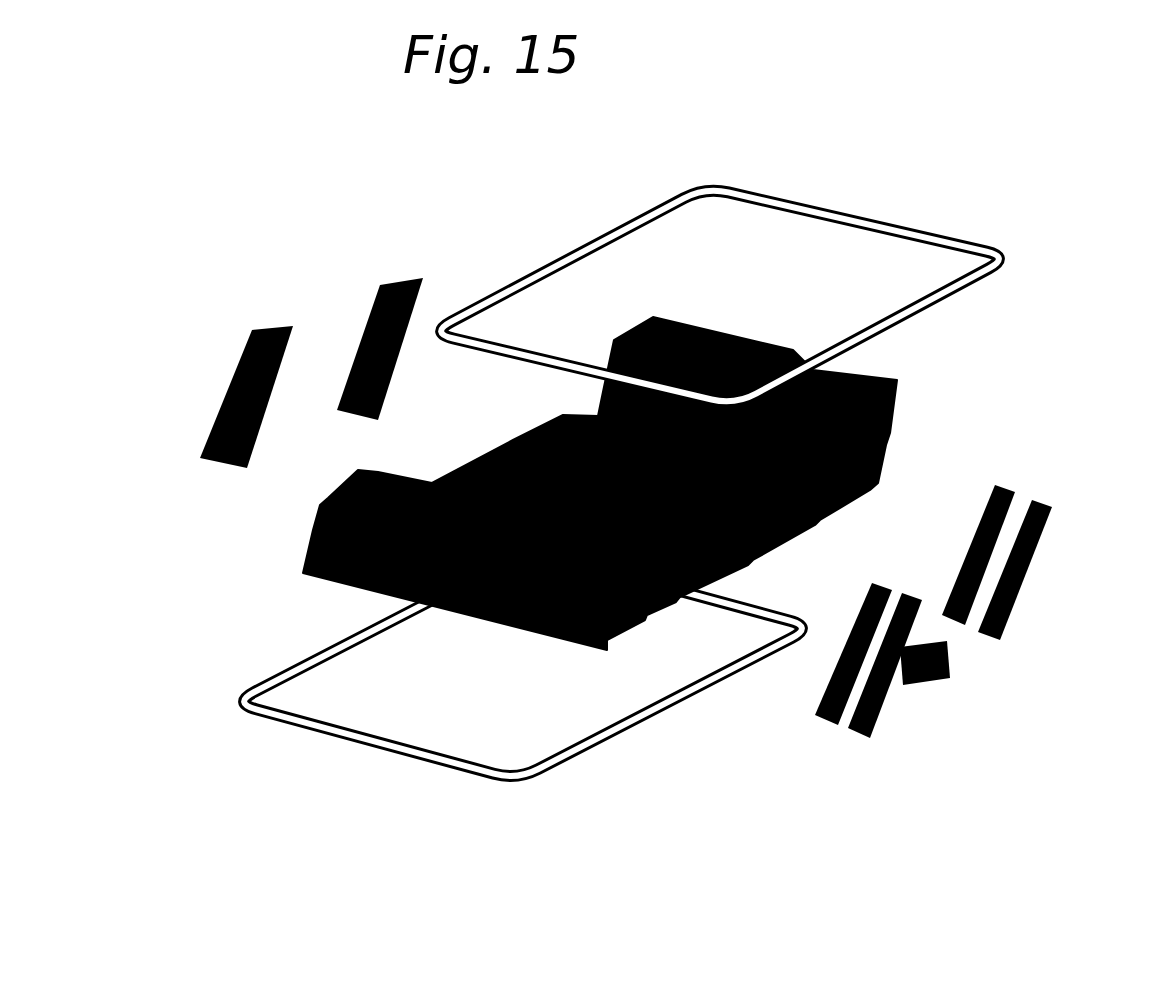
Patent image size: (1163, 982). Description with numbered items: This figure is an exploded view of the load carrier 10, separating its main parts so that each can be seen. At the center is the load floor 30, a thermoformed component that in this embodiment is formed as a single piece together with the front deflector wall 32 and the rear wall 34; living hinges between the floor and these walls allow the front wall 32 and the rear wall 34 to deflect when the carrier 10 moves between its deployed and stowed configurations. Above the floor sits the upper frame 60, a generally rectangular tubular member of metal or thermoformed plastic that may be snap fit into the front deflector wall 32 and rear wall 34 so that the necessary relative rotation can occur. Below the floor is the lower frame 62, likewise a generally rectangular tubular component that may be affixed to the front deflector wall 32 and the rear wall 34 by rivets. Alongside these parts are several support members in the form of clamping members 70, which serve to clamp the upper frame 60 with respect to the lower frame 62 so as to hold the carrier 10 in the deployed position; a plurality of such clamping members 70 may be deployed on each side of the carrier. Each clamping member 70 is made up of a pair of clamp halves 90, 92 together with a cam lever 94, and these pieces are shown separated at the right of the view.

The load carrier 10 is at (1025, 172).
The load floor 30 is at (506, 440).
The front deflector wall 32 is at (312, 531).
The rear wall 34 is at (900, 417).
The upper frame 60 is at (810, 197).
The lower frame 62 is at (402, 753).
The clamping member 70 is at (252, 333).
The clamp half 90 is at (973, 540).
The clamp half 92 is at (1010, 620).
The cam lever 94 is at (1030, 560).